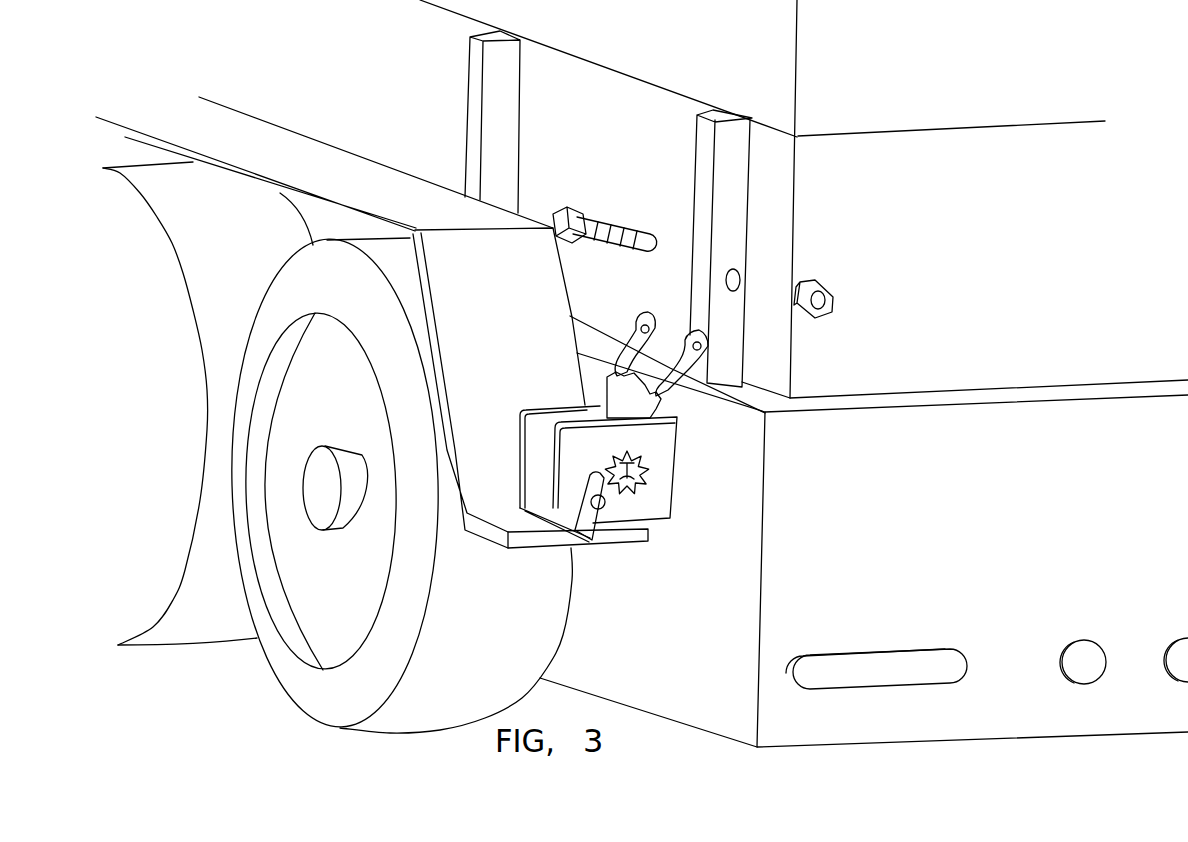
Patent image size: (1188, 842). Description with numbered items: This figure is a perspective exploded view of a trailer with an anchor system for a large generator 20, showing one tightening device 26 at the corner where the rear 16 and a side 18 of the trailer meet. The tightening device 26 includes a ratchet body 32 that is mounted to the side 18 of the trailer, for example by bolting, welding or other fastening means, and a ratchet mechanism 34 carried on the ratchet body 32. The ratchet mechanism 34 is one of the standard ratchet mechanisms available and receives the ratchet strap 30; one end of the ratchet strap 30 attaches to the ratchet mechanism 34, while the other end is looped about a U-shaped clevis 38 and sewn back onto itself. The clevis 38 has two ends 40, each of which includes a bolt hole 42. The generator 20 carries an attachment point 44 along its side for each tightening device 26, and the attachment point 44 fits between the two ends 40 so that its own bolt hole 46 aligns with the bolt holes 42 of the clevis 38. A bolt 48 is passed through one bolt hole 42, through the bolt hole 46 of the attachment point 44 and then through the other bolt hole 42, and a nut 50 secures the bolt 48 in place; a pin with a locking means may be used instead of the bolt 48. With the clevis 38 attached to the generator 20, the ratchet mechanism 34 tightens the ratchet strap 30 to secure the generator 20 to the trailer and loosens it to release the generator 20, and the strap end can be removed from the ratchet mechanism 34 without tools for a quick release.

The rear 16 is at (910, 538).
The side 18 is at (724, 694).
The generator 20 is at (656, 53).
The tightening device 26 is at (680, 537).
The ratchet strap 30 is at (634, 395).
The ratchet body 32 is at (670, 505).
The ratchet mechanism 34 is at (647, 468).
The clevis 38 is at (583, 343).
The end of clevis 40 is at (633, 318).
The bolt hole of clevis 42 is at (648, 320).
The attachment point 44 is at (733, 212).
The bolt hole of attachment point 46 is at (744, 275).
The bolt 48 is at (588, 218).
The nut 50 is at (834, 297).